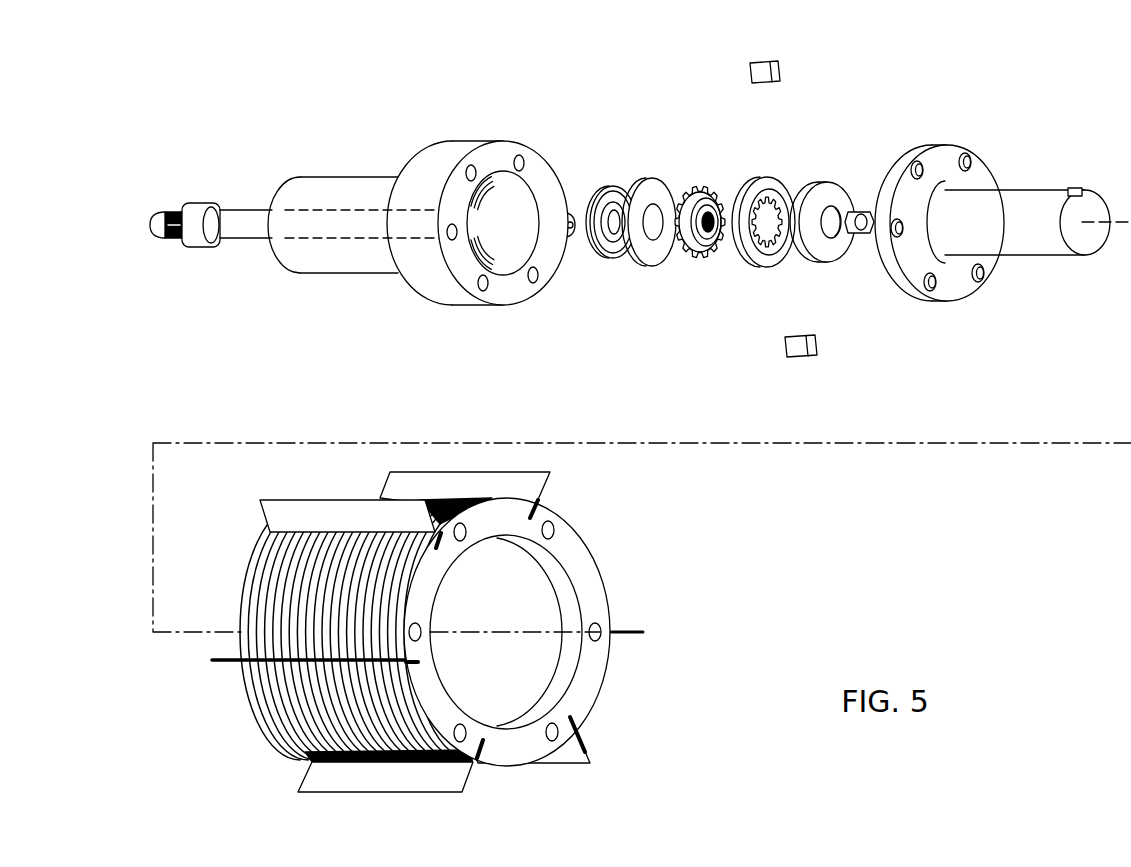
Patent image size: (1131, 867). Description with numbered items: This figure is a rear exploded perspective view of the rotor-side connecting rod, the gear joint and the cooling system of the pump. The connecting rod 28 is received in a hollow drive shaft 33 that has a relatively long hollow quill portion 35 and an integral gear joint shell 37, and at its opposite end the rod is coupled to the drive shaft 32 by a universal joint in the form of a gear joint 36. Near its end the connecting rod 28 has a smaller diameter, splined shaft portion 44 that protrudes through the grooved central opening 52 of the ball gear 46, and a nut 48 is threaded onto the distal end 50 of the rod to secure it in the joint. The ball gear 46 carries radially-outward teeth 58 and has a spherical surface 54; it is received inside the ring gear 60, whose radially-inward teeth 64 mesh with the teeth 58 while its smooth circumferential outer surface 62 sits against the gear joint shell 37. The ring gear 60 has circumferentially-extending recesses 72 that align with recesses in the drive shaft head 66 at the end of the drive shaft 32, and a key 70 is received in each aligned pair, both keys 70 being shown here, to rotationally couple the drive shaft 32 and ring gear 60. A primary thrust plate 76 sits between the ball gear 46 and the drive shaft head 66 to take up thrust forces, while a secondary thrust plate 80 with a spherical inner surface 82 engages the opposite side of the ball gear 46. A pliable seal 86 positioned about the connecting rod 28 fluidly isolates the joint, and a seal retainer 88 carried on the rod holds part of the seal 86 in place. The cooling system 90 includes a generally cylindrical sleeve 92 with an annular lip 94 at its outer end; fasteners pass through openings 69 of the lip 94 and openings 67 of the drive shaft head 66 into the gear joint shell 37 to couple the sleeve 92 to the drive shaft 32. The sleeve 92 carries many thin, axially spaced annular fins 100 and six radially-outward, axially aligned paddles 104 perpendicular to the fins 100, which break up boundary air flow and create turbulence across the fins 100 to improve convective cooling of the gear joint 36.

The connecting rod 28 is at (480, 265).
The drive shaft 32 is at (1035, 192).
The hollow drive shaft 33 is at (312, 178).
The quill portion 35 is at (368, 178).
The gear joint 36 is at (738, 260).
The gear joint shell 37 is at (470, 142).
The shaft portion 44 is at (175, 213).
The ball gear 46 is at (685, 218).
The nut 48 is at (860, 238).
The distal end 50 is at (150, 226).
The central opening 52 is at (702, 234).
The spherical surface 54 is at (705, 258).
The teeth 58 is at (693, 258).
The ring gear 60 is at (795, 174).
The circumferential outer surface 62 is at (742, 256).
The teeth 64 is at (757, 224).
The drive shaft head 66 is at (955, 203).
The openings 67 is at (972, 165).
The openings 69 is at (552, 527).
The key 70 is at (795, 71).
The recesses 72 is at (761, 223).
The primary thrust plate 76 is at (993, 203).
The secondary thrust plate 80 is at (685, 212).
The spherical inner surface 82 is at (652, 180).
The pliable seal 86 is at (612, 186).
The seal retainer 88 is at (200, 205).
The cooling system 90 is at (641, 617).
The sleeve 92 is at (426, 627).
The annular lip 94 is at (606, 650).
The fins 100 is at (262, 575).
The paddles 104 is at (390, 484).